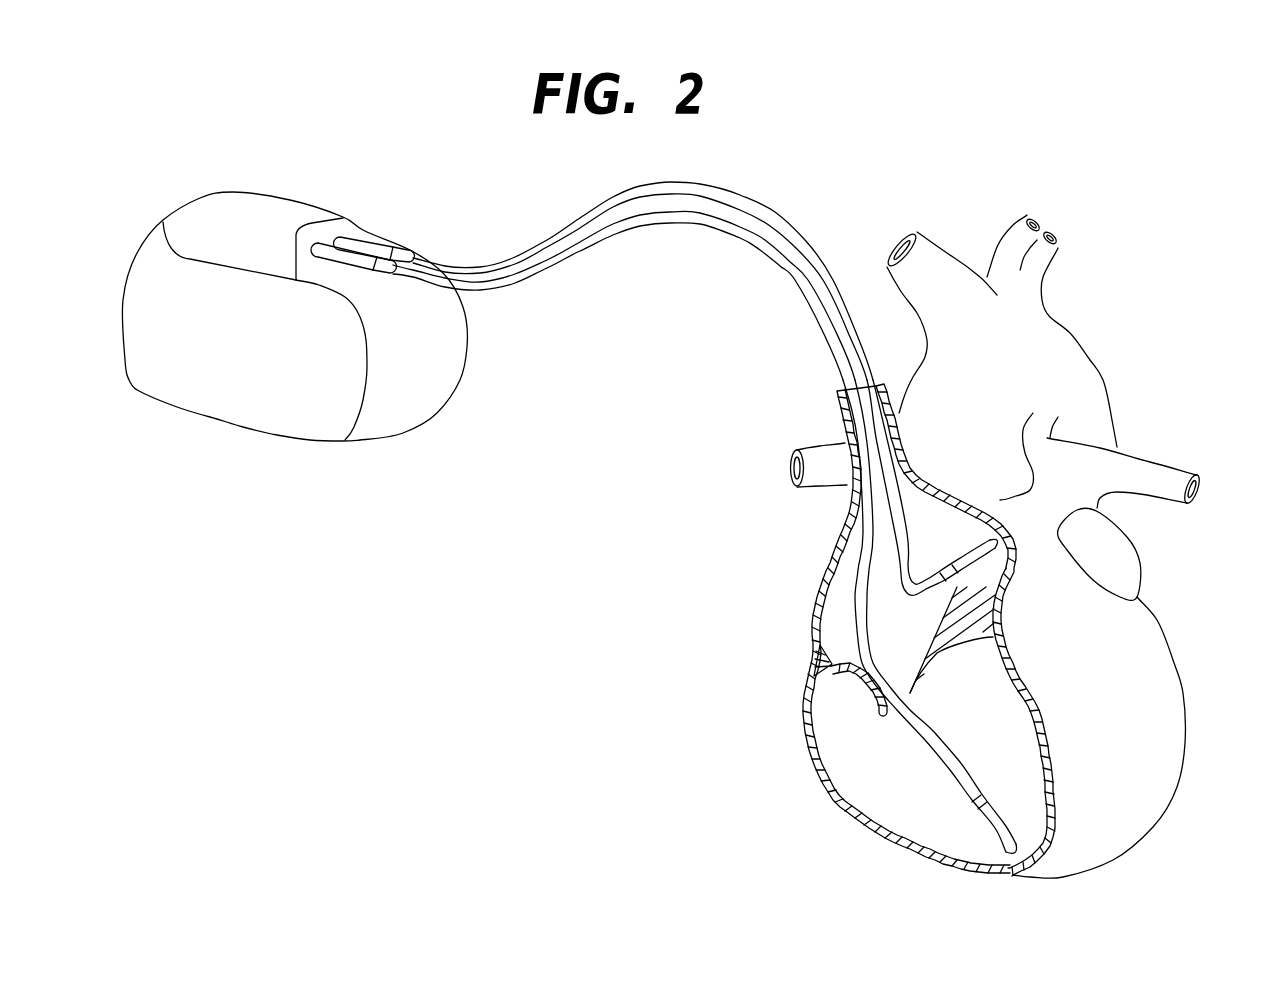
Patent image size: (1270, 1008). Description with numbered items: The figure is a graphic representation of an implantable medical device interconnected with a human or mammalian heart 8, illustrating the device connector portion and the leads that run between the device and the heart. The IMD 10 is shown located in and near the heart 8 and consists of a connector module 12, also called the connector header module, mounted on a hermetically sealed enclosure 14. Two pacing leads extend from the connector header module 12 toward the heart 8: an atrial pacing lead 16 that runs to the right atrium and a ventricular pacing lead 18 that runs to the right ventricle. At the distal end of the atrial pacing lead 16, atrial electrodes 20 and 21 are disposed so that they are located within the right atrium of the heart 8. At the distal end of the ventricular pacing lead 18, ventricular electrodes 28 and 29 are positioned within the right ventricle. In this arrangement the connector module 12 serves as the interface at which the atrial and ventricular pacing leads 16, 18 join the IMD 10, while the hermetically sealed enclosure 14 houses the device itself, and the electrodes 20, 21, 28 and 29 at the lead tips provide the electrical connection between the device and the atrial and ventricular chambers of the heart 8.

The heart 8 is at (1153, 643).
The IMD 10 is at (453, 397).
The connector module 12 is at (262, 208).
The hermetically sealed enclosure 14 is at (350, 440).
The atrial pacing lead 16 is at (670, 187).
The ventricular pacing lead 18 is at (657, 218).
The atrial electrode 20 is at (940, 577).
The atrial electrode 21 is at (970, 510).
The ventricular electrode 28 is at (973, 810).
The ventricular electrode 29 is at (1047, 860).